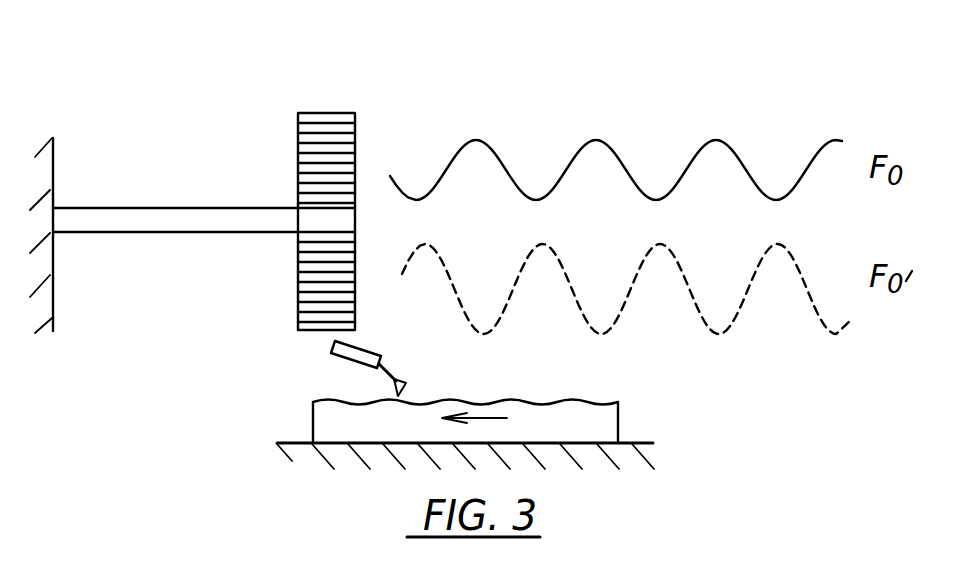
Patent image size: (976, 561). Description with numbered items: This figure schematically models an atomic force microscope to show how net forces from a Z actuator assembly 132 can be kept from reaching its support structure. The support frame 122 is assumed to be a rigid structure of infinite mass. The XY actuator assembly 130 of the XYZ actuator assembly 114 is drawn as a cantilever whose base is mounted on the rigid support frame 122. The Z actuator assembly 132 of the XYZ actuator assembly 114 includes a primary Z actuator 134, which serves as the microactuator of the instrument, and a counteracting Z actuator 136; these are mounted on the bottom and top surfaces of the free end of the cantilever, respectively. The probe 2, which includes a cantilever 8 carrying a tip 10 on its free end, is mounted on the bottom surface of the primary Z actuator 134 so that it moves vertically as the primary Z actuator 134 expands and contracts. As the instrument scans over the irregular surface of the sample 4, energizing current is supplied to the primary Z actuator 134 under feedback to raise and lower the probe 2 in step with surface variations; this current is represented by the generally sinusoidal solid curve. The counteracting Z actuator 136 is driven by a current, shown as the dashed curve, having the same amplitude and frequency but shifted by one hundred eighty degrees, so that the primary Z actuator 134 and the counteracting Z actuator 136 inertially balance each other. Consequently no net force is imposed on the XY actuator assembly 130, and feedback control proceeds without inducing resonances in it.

The probe 2 is at (358, 368).
The sample 4 is at (610, 423).
The cantilever 8 is at (388, 366).
The tip 10 is at (407, 388).
The XYZ actuator assembly 114 is at (258, 185).
The support frame 122 is at (56, 156).
The XY actuator assembly 130 is at (143, 183).
The Z actuator assembly 132 is at (333, 208).
The primary Z actuator 134 is at (298, 272).
The counteracting Z actuator 136 is at (298, 150).